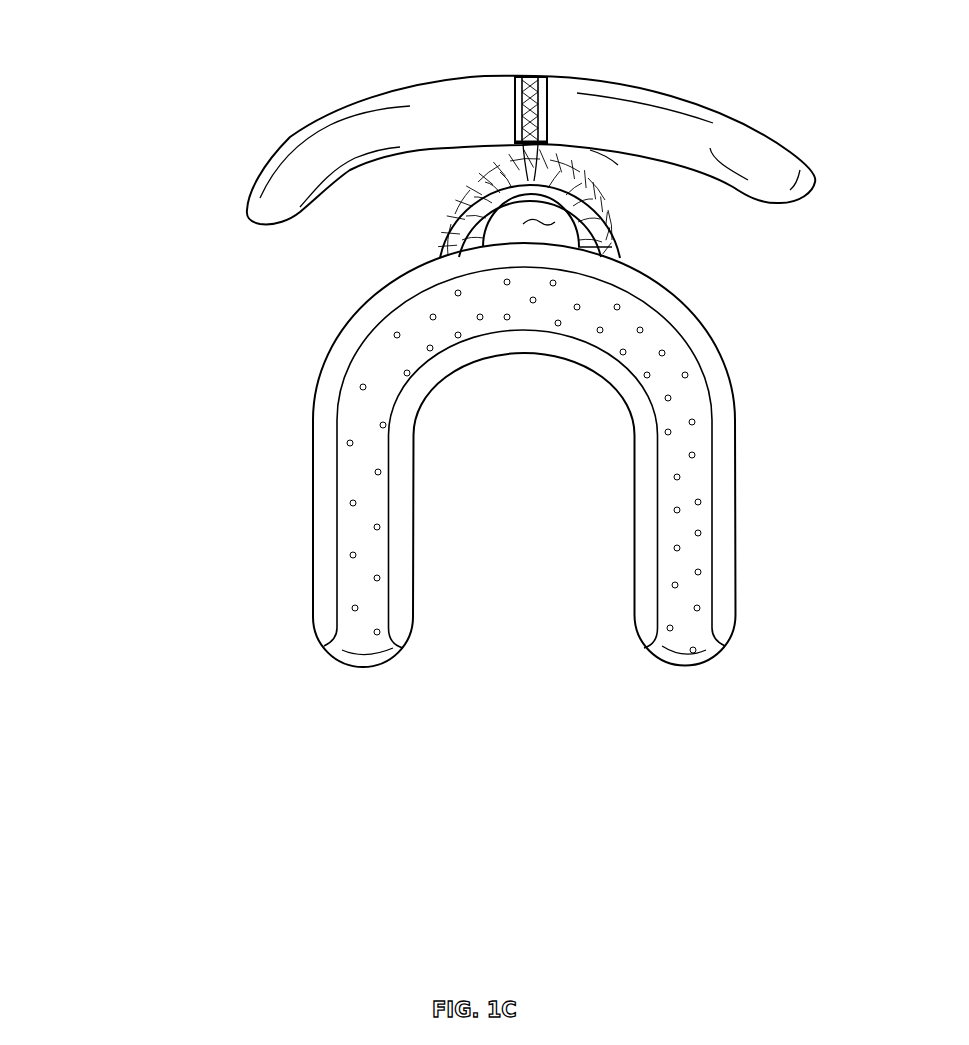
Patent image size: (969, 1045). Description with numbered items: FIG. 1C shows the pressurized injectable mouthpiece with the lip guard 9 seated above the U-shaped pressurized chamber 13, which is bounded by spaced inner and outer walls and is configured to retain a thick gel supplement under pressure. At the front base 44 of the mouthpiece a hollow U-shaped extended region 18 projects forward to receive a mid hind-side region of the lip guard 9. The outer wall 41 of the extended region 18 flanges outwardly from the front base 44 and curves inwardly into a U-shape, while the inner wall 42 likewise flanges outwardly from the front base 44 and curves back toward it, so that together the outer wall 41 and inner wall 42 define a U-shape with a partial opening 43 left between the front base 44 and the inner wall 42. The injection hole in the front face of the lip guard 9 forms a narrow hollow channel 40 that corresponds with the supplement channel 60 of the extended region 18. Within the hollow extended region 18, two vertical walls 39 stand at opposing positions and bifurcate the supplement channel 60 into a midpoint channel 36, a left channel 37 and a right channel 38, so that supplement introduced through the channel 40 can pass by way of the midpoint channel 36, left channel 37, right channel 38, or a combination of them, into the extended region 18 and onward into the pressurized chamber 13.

The lip guard 9 is at (248, 158).
The pressurized chamber 13 is at (407, 350).
The extended region 18 is at (512, 139).
The midpoint channel 36 is at (513, 135).
The left channel 37 is at (515, 125).
The right channel 38 is at (577, 158).
The vertical walls 39 is at (543, 128).
The channel 40 is at (515, 136).
The outer wall 41 is at (437, 214).
The inner wall 42 is at (580, 232).
The partial opening 43 is at (531, 220).
The front base 44 is at (575, 245).
The supplement channel 60 is at (600, 177).